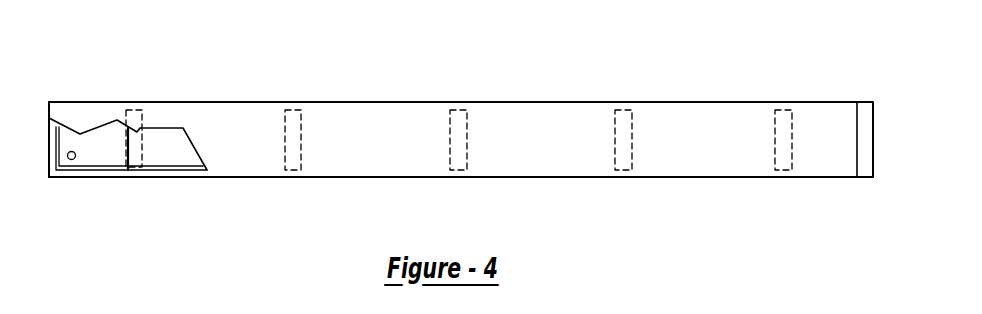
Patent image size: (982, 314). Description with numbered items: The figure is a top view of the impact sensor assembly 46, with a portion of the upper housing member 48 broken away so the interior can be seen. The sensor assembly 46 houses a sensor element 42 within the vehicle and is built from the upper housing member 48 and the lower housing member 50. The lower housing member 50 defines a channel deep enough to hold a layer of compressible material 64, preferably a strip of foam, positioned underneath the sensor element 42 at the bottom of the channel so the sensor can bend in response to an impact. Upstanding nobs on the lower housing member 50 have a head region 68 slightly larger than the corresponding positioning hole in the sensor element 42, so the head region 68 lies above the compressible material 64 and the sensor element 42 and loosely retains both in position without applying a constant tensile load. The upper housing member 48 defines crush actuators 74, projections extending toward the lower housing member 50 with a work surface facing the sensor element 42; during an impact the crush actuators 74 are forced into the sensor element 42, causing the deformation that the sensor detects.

The sensor element 42 is at (97, 140).
The impact sensor assembly 46 is at (882, 95).
The upper housing member 48 is at (548, 157).
The lower housing member 50 is at (53, 137).
The compressible material 64 is at (70, 168).
The head region 68 is at (76, 154).
The crush actuators 74 is at (139, 167).